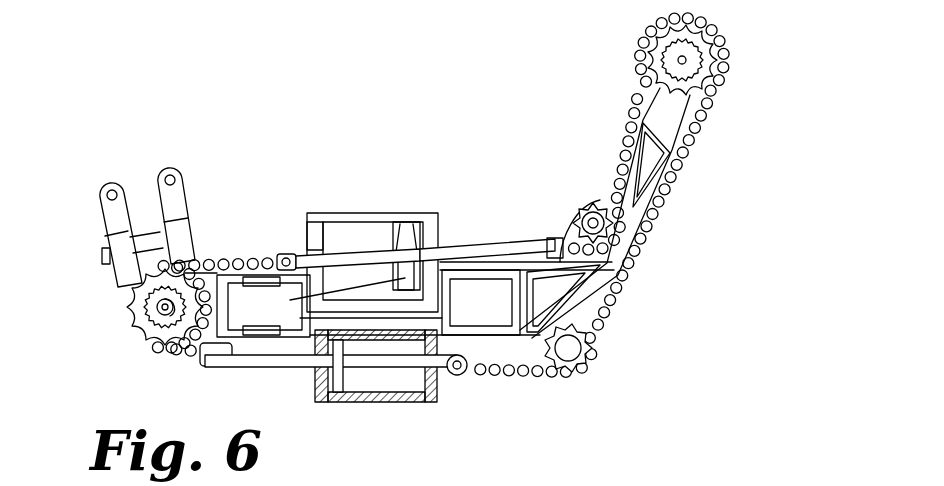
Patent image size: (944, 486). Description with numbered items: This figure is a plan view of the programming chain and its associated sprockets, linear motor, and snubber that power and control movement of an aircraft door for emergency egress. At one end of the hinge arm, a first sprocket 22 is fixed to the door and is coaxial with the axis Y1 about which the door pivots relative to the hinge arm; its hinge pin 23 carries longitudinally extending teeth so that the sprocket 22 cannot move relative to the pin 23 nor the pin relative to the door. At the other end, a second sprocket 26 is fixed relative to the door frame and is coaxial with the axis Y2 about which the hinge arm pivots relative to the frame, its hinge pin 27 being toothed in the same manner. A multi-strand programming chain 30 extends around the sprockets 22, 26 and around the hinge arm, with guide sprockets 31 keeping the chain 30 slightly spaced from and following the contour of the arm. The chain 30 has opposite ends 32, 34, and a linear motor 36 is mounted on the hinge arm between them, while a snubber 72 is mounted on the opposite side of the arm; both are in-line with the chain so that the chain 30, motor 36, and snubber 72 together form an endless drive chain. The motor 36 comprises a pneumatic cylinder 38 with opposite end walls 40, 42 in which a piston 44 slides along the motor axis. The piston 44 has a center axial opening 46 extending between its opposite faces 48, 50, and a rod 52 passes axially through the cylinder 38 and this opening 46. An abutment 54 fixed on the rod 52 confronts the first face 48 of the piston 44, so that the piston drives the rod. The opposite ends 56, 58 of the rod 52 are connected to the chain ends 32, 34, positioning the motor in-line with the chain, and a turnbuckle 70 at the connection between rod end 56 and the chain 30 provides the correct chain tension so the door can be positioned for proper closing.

The first sprocket 22 is at (157, 356).
The hinge pin 23 is at (140, 332).
The second sprocket 26 is at (710, 78).
The hinge pin 27 is at (693, 53).
The programming chain 30 is at (610, 312).
The guide sprockets 31 is at (598, 195).
The chain end 32 is at (578, 207).
The chain end 34 is at (282, 254).
The linear motor 36 is at (417, 192).
The pneumatic cylinder 38 is at (352, 215).
The end wall 40 is at (423, 213).
The end wall 42 is at (333, 213).
The piston 44 is at (405, 278).
The center axial opening 46 is at (457, 250).
The first face 48 is at (382, 222).
The second face 50 is at (413, 286).
The rod 52 is at (527, 270).
The abutment 54 is at (312, 290).
The rod end 56 is at (545, 245).
The rod end 58 is at (303, 250).
The turnbuckle 70 is at (607, 285).
The snubber 72 is at (405, 402).
The axis Y1 is at (163, 307).
The axis Y2 is at (687, 62).